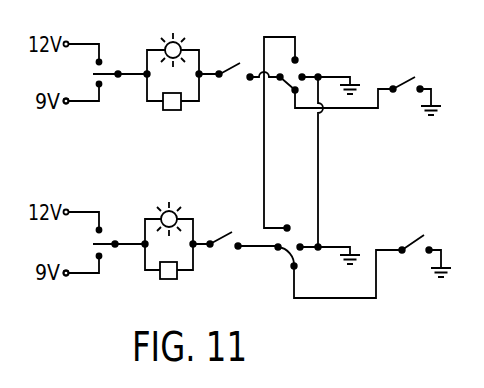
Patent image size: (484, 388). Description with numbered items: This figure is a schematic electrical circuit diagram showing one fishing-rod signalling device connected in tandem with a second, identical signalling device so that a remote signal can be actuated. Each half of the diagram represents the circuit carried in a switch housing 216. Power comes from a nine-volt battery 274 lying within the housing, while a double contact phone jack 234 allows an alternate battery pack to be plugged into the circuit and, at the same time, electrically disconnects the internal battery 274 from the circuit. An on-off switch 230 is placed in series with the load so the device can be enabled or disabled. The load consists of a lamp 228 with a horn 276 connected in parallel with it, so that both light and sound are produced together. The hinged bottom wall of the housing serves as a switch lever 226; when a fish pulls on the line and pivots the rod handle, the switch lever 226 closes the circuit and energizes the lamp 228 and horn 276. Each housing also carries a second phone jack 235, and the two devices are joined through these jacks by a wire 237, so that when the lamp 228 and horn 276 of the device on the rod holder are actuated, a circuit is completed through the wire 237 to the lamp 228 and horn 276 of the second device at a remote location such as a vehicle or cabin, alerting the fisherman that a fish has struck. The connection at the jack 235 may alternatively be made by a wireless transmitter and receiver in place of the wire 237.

The switch housing 216 is at (435, 280).
The switch lever 226 is at (409, 235).
The lamp 228 is at (171, 211).
The on-off switch 230 is at (222, 233).
The double contact phone jack 234 is at (106, 238).
The second phone jack 235 is at (286, 258).
The wire 237 is at (264, 142).
The 9-volt battery 274 is at (59, 318).
The horn 276 is at (139, 298).